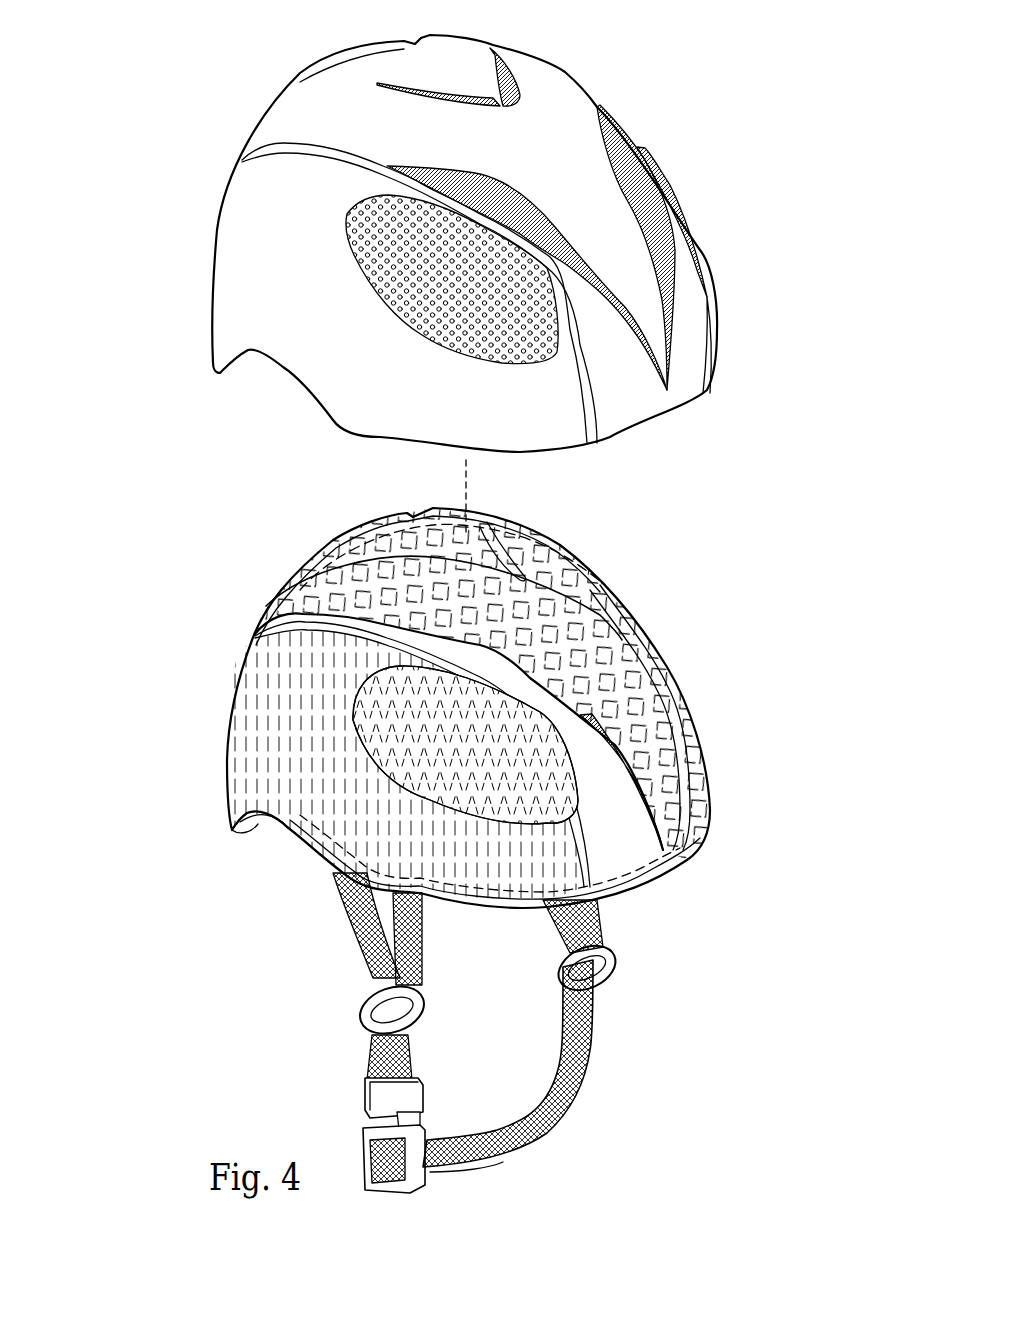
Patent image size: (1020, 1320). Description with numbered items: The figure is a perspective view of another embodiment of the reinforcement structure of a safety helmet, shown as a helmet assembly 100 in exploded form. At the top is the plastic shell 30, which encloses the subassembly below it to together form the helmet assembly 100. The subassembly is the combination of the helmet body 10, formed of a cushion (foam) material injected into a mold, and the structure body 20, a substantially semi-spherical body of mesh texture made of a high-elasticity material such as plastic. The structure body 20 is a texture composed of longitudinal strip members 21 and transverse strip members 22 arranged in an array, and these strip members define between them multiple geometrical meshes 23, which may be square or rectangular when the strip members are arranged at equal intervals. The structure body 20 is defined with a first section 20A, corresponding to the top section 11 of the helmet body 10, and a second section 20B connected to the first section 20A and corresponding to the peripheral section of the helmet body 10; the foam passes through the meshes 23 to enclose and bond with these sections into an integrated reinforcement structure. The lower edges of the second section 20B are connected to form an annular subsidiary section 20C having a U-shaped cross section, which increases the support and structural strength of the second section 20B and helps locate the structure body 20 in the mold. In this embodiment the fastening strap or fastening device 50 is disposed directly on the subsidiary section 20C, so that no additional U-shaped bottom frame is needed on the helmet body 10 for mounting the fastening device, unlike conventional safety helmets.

The helmet assembly 100 is at (113, 310).
The plastic shell 30 is at (556, 83).
The helmet body 10 is at (210, 630).
The structure body 20 is at (625, 624).
The first section 20A is at (450, 505).
The second section 20B is at (274, 763).
The subsidiary section 20C is at (294, 830).
The top section 11 is at (487, 512).
The transverse strip members 22 is at (592, 576).
The meshes 23 is at (330, 583).
The longitudinal strip members 21 is at (680, 697).
The fastening strap or fastening device 50 is at (593, 1043).